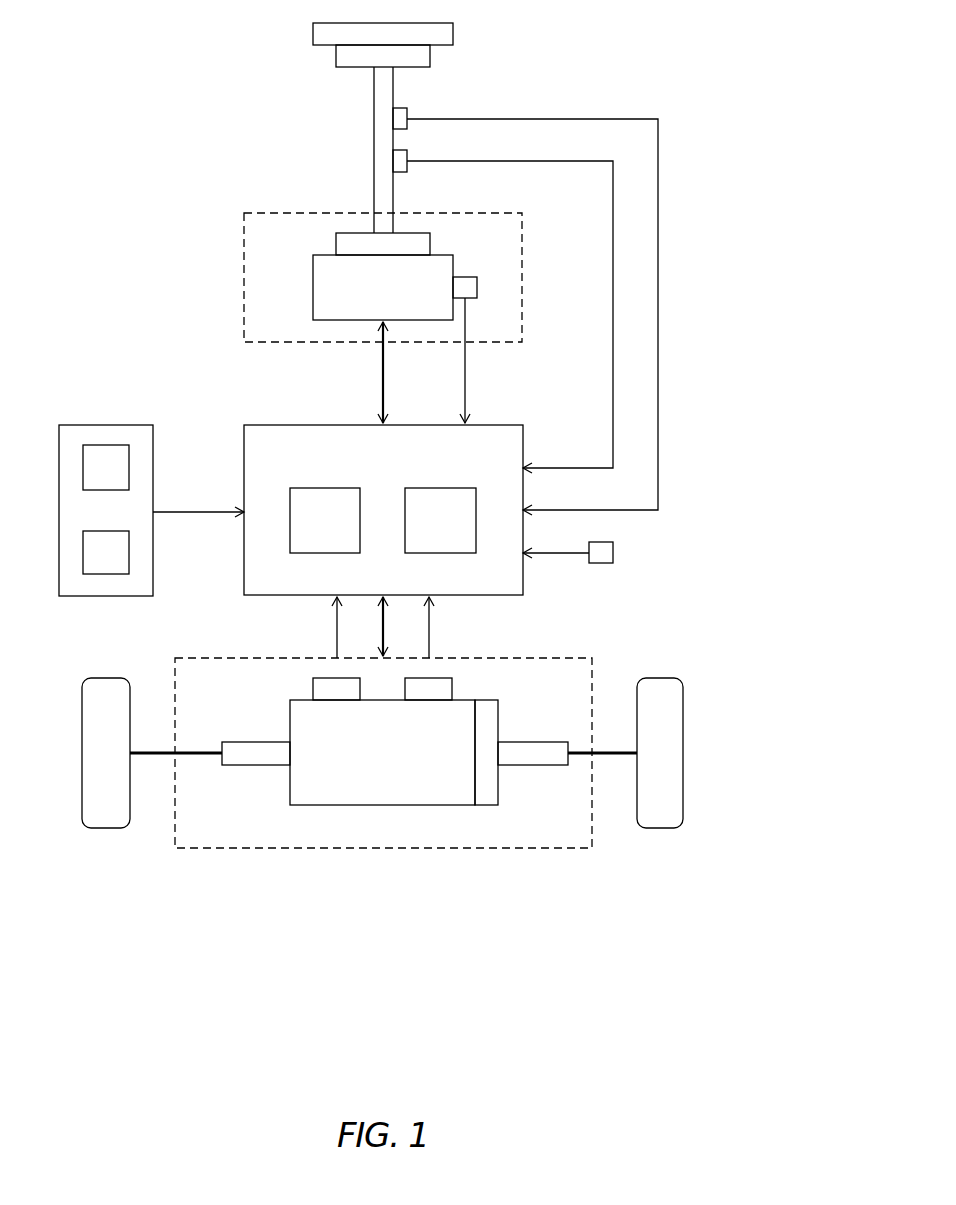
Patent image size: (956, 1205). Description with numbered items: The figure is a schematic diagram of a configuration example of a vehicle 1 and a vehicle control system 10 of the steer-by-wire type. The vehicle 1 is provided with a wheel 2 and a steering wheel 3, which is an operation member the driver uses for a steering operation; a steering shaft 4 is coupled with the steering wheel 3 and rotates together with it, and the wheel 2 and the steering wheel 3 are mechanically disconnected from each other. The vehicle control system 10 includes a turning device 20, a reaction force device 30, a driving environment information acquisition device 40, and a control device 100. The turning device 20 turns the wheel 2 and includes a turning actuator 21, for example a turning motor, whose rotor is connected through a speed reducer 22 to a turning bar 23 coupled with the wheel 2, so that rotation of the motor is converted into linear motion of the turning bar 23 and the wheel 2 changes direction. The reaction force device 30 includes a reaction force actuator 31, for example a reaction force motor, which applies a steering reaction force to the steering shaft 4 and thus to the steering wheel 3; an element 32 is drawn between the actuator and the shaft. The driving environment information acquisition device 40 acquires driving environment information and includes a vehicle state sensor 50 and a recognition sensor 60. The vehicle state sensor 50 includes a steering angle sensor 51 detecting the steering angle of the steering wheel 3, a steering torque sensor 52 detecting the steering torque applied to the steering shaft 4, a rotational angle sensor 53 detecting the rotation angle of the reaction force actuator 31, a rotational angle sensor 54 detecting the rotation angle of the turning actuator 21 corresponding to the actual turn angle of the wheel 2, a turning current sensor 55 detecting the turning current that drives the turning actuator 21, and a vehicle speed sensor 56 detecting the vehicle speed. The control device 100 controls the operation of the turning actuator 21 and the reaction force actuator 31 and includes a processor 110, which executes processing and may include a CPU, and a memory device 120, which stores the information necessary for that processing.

The vehicle 1 is at (190, 80).
The wheel 2 is at (105, 829).
The steering wheel 3 is at (313, 32).
The steering shaft 4 is at (373, 84).
The vehicle control system 10 is at (522, 1009).
The turning device 20 is at (385, 848).
The turning actuator 21 is at (375, 807).
The speed reducer 22 is at (486, 807).
The turning bar 23 is at (262, 766).
The reaction force device 30 is at (244, 276).
The reaction force actuator 31 is at (313, 278).
The reduction gear 32 is at (337, 239).
The driving environment information acquisition device 40 is at (103, 425).
The vehicle state sensor 50 is at (106, 467).
The steering angle sensor 51 is at (396, 118).
The steering torque sensor 52 is at (396, 161).
The rotational angle sensor 53 is at (477, 288).
The rotational angle sensor 54 is at (452, 693).
The turning current sensor 55 is at (313, 693).
The vehicle speed sensor 56 is at (613, 553).
The recognition sensor 60 is at (106, 552).
The control device 100 is at (287, 425).
The processor 110 is at (325, 520).
The memory device 120 is at (440, 520).